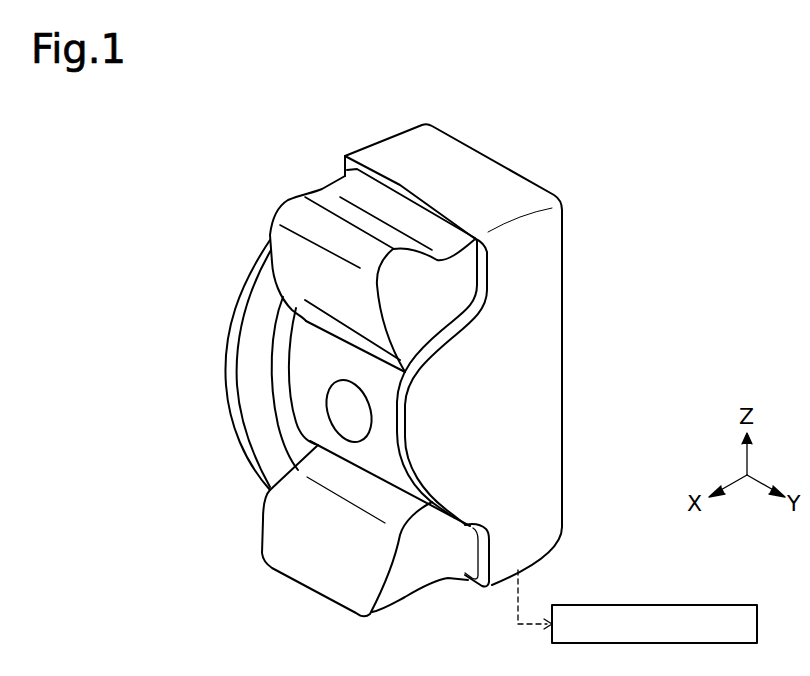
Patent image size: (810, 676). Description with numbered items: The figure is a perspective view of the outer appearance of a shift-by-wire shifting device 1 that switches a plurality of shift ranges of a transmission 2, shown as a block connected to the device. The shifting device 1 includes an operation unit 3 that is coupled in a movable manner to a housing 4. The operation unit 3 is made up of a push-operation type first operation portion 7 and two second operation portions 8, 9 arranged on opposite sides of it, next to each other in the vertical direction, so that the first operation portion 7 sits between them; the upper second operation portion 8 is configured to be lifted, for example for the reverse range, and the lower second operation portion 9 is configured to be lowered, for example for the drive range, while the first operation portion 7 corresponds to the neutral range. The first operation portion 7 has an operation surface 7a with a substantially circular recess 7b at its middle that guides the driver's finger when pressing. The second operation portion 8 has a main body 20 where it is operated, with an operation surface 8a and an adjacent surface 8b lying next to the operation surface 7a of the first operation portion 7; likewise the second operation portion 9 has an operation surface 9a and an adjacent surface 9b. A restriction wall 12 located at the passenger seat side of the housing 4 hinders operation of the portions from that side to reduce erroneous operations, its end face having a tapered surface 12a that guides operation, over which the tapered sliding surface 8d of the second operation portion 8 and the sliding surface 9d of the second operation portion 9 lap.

The shifting device 1 is at (247, 112).
The transmission 2 is at (733, 605).
The operation unit 3 is at (300, 327).
The housing 4 is at (400, 126).
The first operation portion 7 is at (312, 365).
The operation surface 7a is at (299, 377).
The recess 7b is at (360, 418).
The second operation portion 8 is at (283, 207).
The operation surface 8a is at (293, 258).
The adjacent surface 8b is at (413, 360).
The tapered sliding surface 8d is at (291, 297).
The second operation portion 9 is at (432, 590).
The operation surface 9a is at (323, 540).
The adjacent surface 9b is at (390, 502).
The sliding surface 9d is at (291, 479).
The restriction wall 12 is at (227, 396).
The tapered surface 12a is at (262, 441).
The main body 20 is at (325, 225).